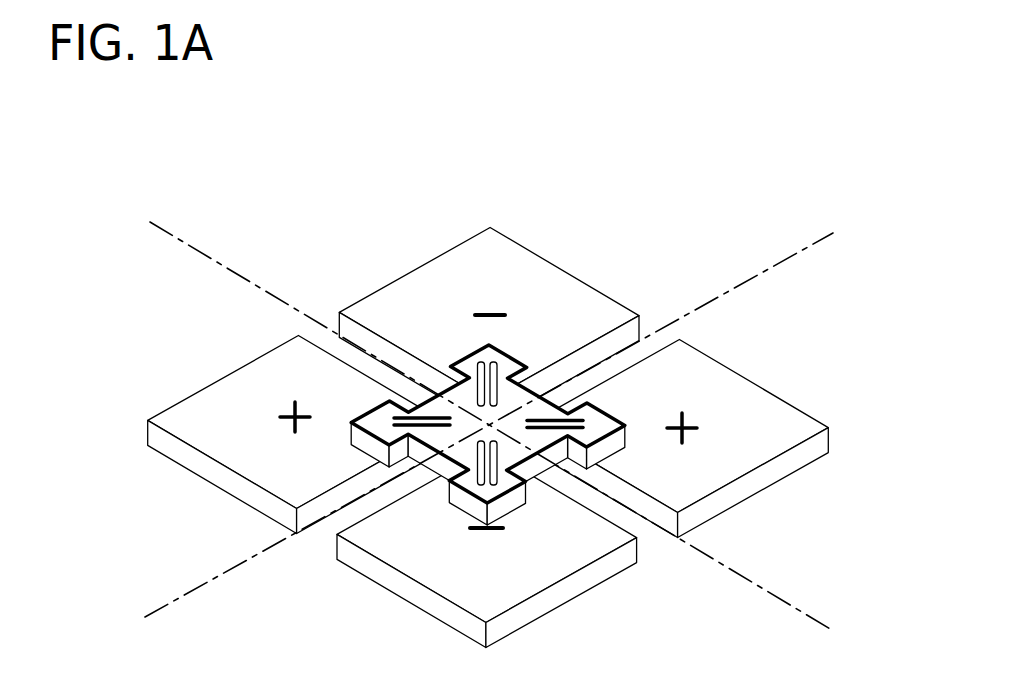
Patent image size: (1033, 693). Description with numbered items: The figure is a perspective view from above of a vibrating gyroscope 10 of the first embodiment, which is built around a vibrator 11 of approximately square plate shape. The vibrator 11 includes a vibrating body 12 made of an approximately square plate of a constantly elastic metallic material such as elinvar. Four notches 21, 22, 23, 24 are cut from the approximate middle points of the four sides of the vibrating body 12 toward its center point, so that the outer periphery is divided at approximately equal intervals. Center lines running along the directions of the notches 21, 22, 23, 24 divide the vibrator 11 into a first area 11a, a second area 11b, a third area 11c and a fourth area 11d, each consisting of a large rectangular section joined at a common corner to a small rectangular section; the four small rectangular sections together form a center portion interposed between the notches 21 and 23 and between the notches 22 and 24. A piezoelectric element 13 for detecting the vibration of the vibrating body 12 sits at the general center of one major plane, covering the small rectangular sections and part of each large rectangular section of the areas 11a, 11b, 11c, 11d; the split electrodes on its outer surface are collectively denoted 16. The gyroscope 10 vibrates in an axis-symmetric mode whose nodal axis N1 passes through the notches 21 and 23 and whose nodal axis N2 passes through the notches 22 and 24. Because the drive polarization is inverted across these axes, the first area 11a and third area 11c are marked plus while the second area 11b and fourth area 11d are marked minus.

The vibrating gyroscope 10 is at (788, 141).
The vibrator 11 is at (598, 262).
The first area 11a is at (553, 564).
The second area 11b is at (700, 370).
The third area 11c is at (500, 250).
The fourth area 11d is at (242, 394).
The vibrating body 12 is at (719, 439).
The piezoelectric element 13 is at (360, 427).
The split electrodes 16 is at (452, 480).
The notch 21 is at (322, 537).
The notch 22 is at (650, 540).
The notch 23 is at (643, 357).
The notch 24 is at (317, 338).
The nodal axis N1 is at (168, 602).
The nodal axis N2 is at (160, 228).